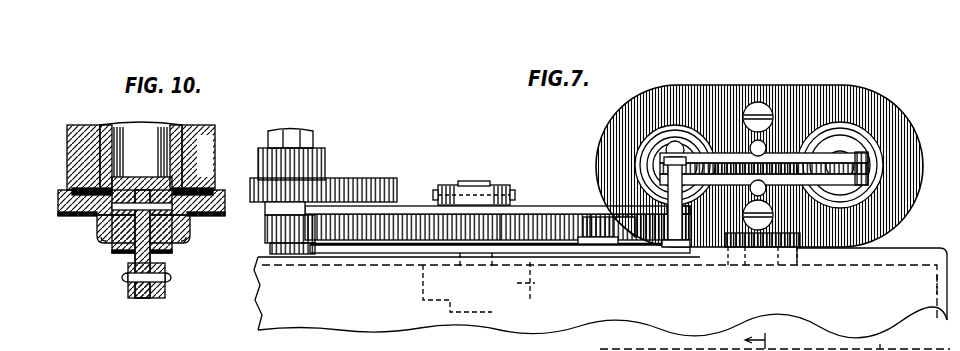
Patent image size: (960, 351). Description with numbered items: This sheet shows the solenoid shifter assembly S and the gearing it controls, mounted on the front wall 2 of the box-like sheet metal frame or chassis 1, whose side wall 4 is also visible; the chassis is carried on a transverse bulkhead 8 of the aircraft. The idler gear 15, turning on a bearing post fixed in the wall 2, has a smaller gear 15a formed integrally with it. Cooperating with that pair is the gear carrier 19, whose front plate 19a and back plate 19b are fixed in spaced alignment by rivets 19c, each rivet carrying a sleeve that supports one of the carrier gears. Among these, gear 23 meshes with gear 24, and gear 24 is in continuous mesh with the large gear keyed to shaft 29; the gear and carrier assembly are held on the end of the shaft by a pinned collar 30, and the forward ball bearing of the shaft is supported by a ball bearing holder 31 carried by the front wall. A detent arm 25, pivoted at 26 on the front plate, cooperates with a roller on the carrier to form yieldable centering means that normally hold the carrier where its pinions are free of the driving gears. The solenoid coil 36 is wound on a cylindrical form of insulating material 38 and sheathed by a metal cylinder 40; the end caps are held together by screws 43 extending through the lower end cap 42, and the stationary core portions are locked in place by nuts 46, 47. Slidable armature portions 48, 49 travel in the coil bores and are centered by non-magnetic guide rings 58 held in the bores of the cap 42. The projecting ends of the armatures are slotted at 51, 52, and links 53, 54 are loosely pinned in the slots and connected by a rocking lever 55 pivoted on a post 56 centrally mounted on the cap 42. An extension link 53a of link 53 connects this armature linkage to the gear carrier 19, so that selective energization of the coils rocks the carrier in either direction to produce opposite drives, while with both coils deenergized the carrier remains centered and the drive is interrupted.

In FIG. 10, the solenoid shifter assembly S is at (52, 123).
In FIG. 7, the solenoid shifter assembly S is at (645, 84).
In FIG. 10, the metal cylinder 40 is at (67, 132).
In FIG. 10, the slidable armature portion 49 is at (120, 150).
In FIG. 7, the slidable armature portion 49 is at (823, 143).
In FIG. 10, the cylindrical form of insulating material 38 is at (100, 170).
In FIG. 10, the solenoid coil 36 is at (80, 180).
In FIG. 10, the end cap 42 is at (88, 213).
In FIG. 7, the end cap 42 is at (663, 97).
In FIG. 10, the non-magnetic guide ring 58 is at (185, 240).
In FIG. 10, the slot 52 is at (100, 223).
In FIG. 7, the slot 52 is at (867, 147).
In FIG. 10, the slot 51 is at (9, 249).
In FIG. 7, the slot 51 is at (653, 172).
In FIG. 10, the link 54 is at (115, 252).
In FIG. 7, the link 54 is at (832, 165).
In FIG. 10, the rocking lever 55 is at (160, 298).
In FIG. 7, the rocking lever 55 is at (737, 185).
In FIG. 7, the frame or chassis 1 is at (253, 293).
In FIG. 7, the front wall 2 is at (333, 262).
In FIG. 7, the side wall 4 is at (937, 284).
In FIG. 7, the ball bearing holder 31 is at (578, 240).
In FIG. 7, the gear carrier 19 is at (427, 201).
In FIG. 7, the front plate 19a is at (532, 212).
In FIG. 7, the back plate 19b is at (565, 212).
In FIG. 7, the rivet 19c is at (670, 250).
In FIG. 7, the gear 24 is at (397, 212).
In FIG. 7, the smaller gear 15a is at (313, 150).
In FIG. 7, the idler gear 15 is at (332, 182).
In FIG. 7, the pinion 23 is at (328, 227).
In FIG. 7, the shaft 29 is at (470, 184).
In FIG. 7, the pinned collar 30 is at (492, 210).
In FIG. 7, the pivot 26 is at (593, 222).
In FIG. 7, the detent arm 25 is at (598, 241).
In FIG. 7, the slidable armature portion 48 is at (668, 138).
In FIG. 7, the post 56 is at (757, 165).
In FIG. 7, the extension link 53a is at (657, 177).
In FIG. 7, the link 53 is at (650, 167).
In FIG. 7, the screws 43 is at (758, 108).
In FIG. 7, the nut 46 is at (650, 349).
In FIG. 7, the transverse bulkhead 8 is at (761, 336).
In FIG. 7, the nut 47 is at (880, 341).